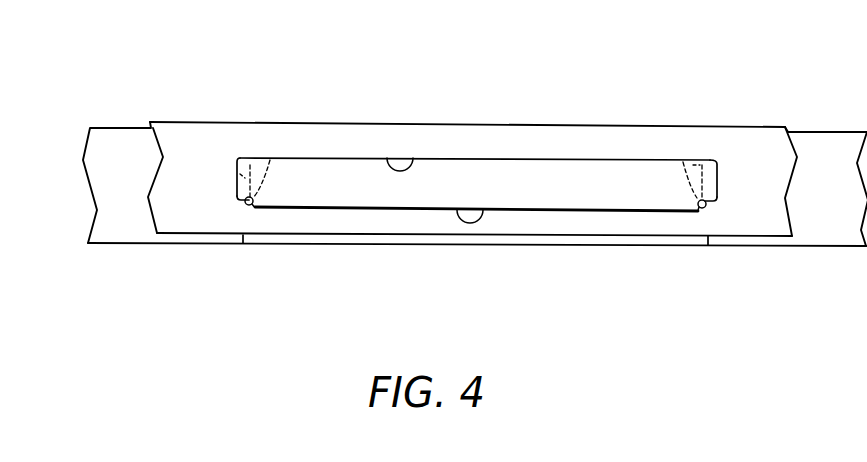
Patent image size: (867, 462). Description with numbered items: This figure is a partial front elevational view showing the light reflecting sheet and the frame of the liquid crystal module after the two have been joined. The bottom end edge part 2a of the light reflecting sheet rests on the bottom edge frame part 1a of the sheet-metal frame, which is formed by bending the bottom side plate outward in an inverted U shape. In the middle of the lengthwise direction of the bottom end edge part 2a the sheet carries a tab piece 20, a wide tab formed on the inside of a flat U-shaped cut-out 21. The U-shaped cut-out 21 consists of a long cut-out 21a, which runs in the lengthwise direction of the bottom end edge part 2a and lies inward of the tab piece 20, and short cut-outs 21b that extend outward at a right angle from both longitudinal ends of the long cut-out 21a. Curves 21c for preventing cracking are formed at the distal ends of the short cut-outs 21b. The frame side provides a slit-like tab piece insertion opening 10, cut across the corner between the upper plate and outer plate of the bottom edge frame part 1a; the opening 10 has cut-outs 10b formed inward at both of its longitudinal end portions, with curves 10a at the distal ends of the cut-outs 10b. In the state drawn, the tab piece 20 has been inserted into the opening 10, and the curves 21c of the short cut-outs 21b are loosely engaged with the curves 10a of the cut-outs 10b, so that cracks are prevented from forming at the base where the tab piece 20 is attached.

The bottom edge frame part 1a is at (130, 126).
The bottom end edge part 2a is at (780, 152).
The tab piece insertion opening 10 is at (480, 208).
The curve section 10a is at (270, 160).
The cut-out 10b is at (251, 205).
The tab piece 20 is at (537, 167).
The U-shaped cut-out 21 is at (594, 146).
The long cut-out 21a is at (388, 157).
The short cut-out 21b is at (243, 160).
The curve portion 21c is at (233, 202).